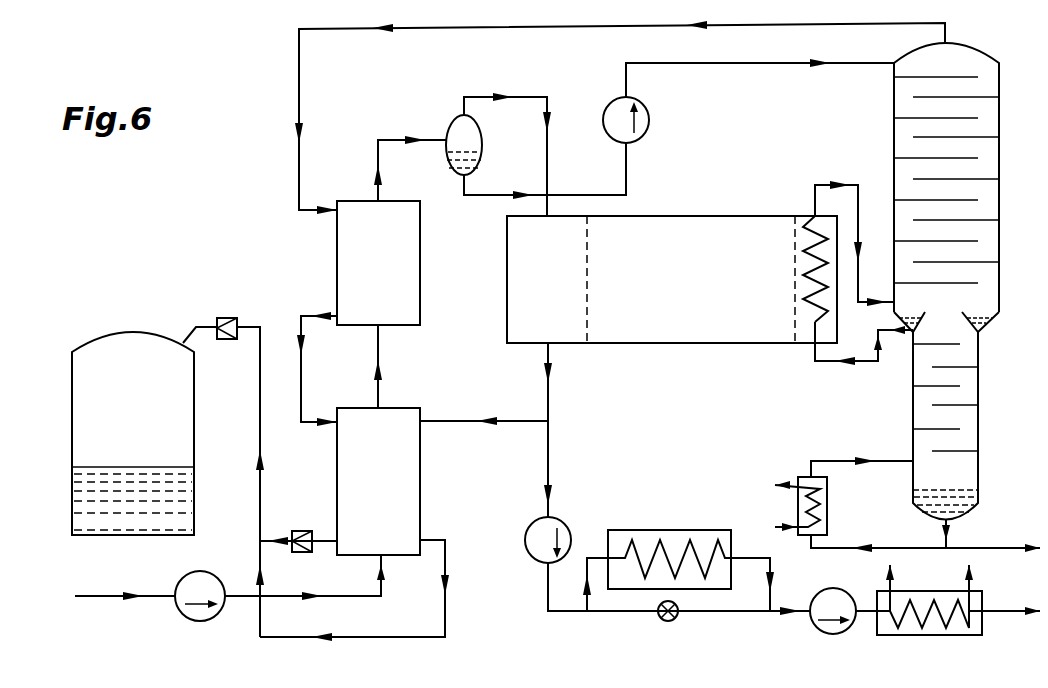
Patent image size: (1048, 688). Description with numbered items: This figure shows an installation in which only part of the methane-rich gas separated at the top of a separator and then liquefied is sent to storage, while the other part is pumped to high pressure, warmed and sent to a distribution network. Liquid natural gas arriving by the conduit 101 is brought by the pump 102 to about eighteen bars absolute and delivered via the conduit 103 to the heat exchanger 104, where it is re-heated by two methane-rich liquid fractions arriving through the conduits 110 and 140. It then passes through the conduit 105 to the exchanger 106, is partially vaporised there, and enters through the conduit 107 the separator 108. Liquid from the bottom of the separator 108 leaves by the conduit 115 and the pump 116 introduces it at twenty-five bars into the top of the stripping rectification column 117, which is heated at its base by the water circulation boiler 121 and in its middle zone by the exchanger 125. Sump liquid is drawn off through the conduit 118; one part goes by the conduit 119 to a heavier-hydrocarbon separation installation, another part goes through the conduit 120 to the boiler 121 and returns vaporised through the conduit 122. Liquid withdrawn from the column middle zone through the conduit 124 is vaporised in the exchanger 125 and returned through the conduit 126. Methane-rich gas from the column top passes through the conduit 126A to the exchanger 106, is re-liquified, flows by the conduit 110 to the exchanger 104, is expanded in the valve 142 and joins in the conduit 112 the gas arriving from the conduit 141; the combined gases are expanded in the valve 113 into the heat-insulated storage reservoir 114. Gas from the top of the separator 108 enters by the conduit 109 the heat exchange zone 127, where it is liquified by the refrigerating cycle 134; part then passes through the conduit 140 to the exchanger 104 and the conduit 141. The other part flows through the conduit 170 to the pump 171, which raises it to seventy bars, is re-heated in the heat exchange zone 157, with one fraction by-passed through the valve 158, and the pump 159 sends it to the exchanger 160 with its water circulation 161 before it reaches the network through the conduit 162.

The conduit 101 is at (127, 596).
The pump 102 is at (218, 578).
The conduit 103 is at (330, 595).
The heat exchanger 104 is at (337, 470).
The conduit 105 is at (378, 385).
The exchanger 106 is at (420, 282).
The conduit 107 is at (394, 140).
The separator 108 is at (482, 136).
The conduit 109 is at (547, 146).
The conduit 110 is at (301, 371).
The conduit 112 is at (260, 401).
The valve 113 is at (228, 316).
The storage reservoir 114 is at (73, 414).
The conduit 115 is at (595, 195).
The pump 116 is at (649, 117).
The stripping rectification column 117 is at (894, 120).
The conduit 118 is at (951, 537).
The conduit 119 is at (1016, 545).
The conduit 120 is at (881, 545).
The water circulation boiler 121 is at (827, 505).
The conduit 122 is at (841, 458).
The conduit 124 is at (858, 361).
The exchanger 125 is at (828, 318).
The conduit 126 is at (823, 185).
The conduit 126A is at (731, 24).
The heat exchange zone 127 is at (507, 282).
The refrigerating cycle 134 is at (707, 216).
The conduit 140 is at (548, 393).
The conduit 141 is at (396, 637).
The valve 142 is at (299, 531).
The heat exchange zone 157 is at (666, 530).
The valve 158 is at (668, 621).
The pump 159 is at (818, 587).
The exchanger 160 is at (909, 594).
The water circulation 161 is at (944, 627).
The conduit 162 is at (1009, 611).
The conduit 170 is at (548, 460).
The pump 171 is at (525, 540).